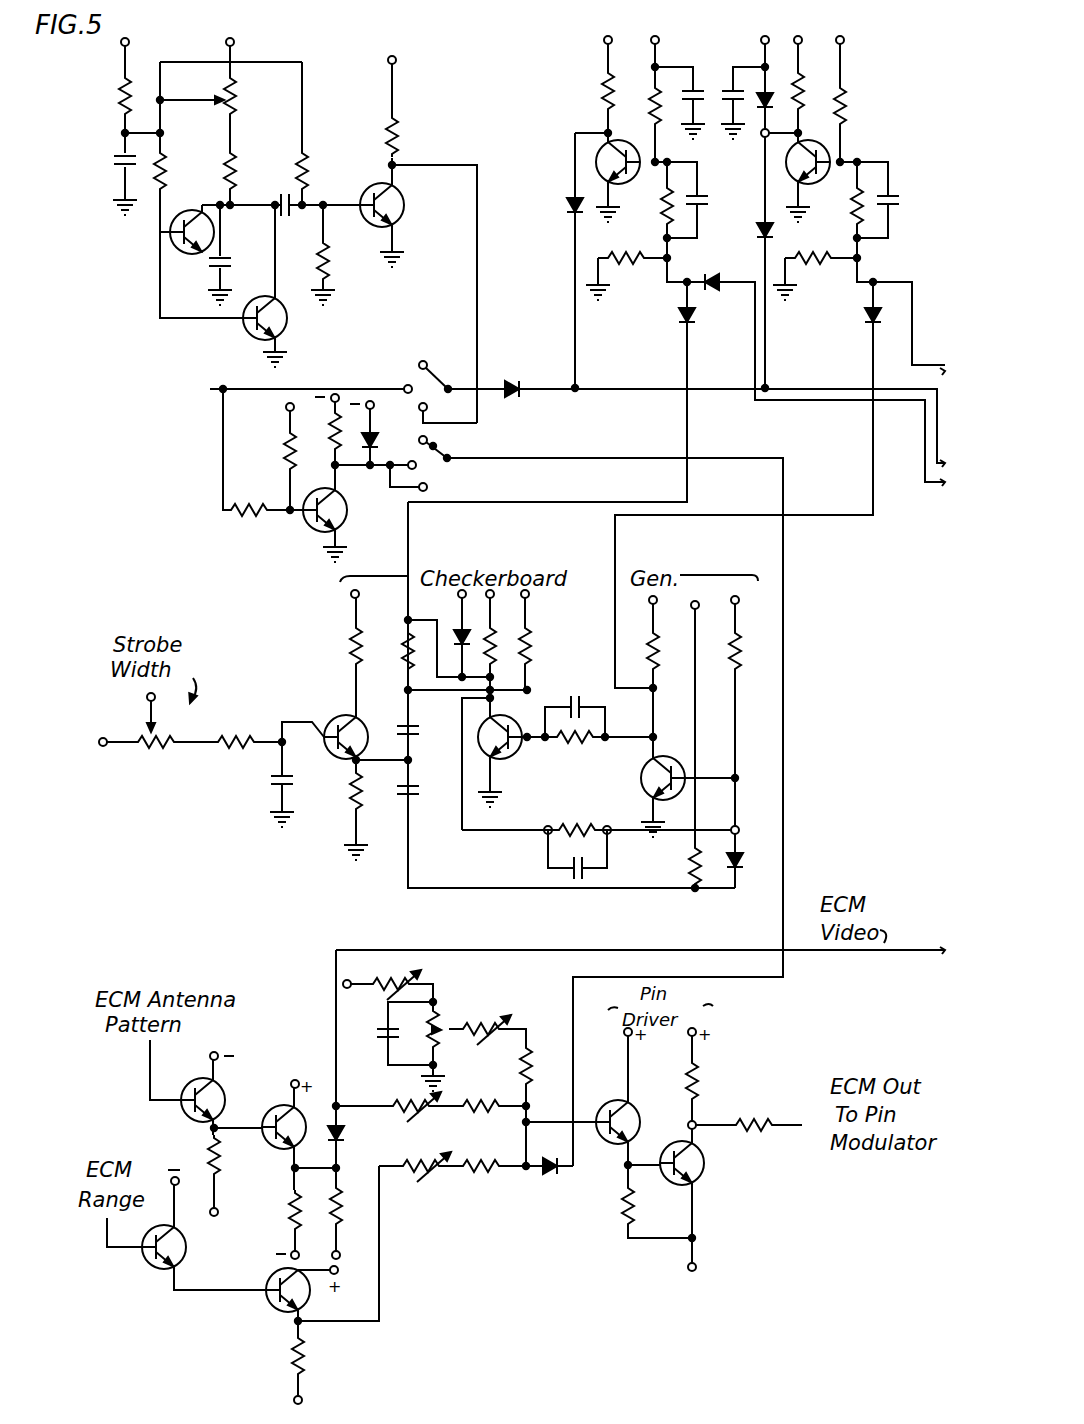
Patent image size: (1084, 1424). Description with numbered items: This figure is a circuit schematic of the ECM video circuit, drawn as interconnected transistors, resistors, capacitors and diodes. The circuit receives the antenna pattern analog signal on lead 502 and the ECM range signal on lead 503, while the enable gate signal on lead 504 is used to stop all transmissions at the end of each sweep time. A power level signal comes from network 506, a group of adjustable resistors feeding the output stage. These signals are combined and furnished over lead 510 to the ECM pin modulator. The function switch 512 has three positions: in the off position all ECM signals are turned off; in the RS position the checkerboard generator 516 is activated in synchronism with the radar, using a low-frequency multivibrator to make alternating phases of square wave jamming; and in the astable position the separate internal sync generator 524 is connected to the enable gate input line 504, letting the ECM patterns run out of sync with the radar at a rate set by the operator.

The internal sync generator 524 is at (295, 218).
The checkerboard generator 516 is at (676, 350).
The enable gate signal lead 504 is at (254, 462).
The function switch 512 is at (456, 447).
The power level network 506 is at (525, 981).
The output lead 510 is at (778, 1130).
The antenna pattern signal lead 502 is at (164, 1096).
The ECM range signal lead 503 is at (107, 1247).